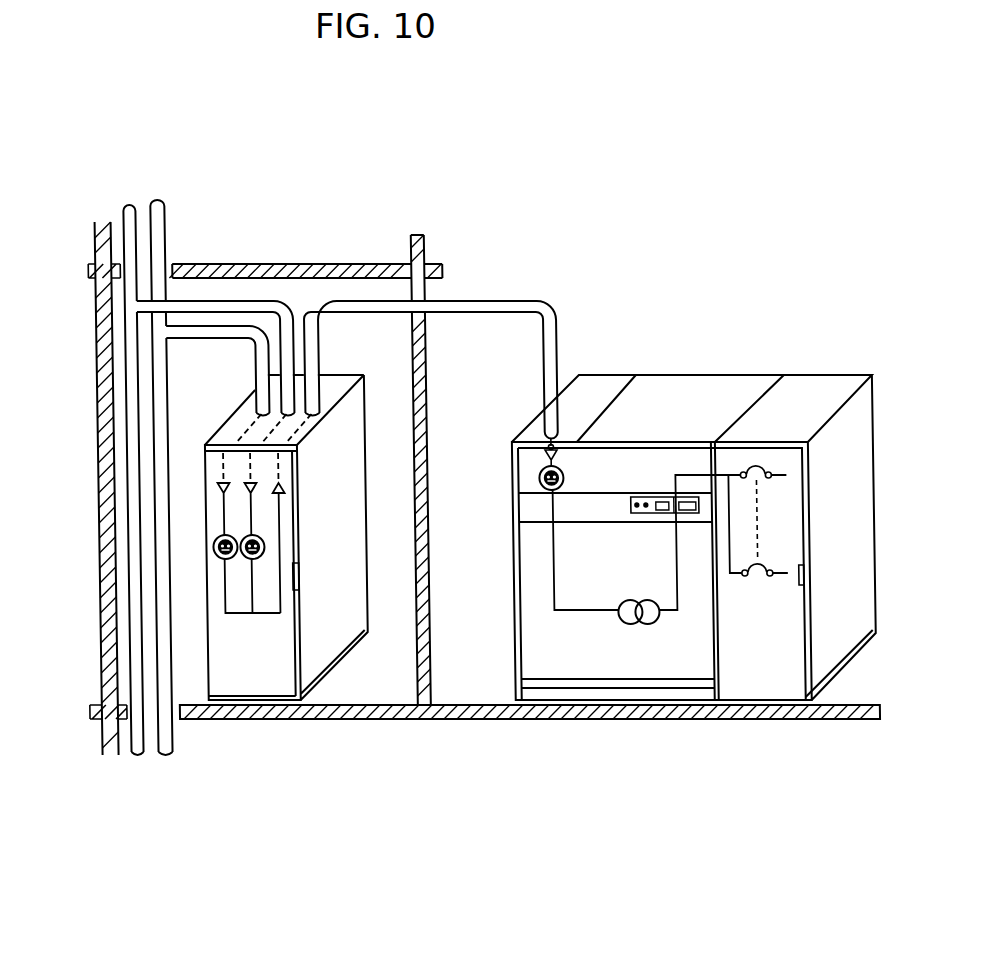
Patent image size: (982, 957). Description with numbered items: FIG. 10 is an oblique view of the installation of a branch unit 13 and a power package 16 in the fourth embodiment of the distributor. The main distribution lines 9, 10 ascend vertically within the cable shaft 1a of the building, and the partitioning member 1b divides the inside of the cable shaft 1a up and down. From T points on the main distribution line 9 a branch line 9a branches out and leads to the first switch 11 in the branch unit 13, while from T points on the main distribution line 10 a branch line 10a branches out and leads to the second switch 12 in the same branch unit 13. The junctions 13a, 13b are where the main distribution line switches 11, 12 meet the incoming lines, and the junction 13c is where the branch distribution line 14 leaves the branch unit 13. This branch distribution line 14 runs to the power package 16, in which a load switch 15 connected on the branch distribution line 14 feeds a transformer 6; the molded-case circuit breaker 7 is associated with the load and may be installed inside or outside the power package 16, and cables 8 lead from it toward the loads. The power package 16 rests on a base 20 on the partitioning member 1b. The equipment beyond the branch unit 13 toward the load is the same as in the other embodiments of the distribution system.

The cable shaft 1a is at (108, 377).
The partitioning member 1b is at (323, 264).
The transformer 6 is at (647, 624).
The molded-case circuit breaker 7 is at (757, 580).
The cable 8 is at (777, 576).
The main distribution line 9 is at (172, 742).
The branch line 9a is at (247, 325).
The main distribution line 10 is at (125, 742).
The branch line 10a is at (212, 300).
The first switch 11 is at (213, 550).
The second switch 12 is at (240, 534).
The branch unit 13 is at (355, 648).
The junction 13a is at (220, 486).
The junction 13b is at (249, 483).
The junction 13c is at (287, 490).
The branch distribution line 14 is at (516, 299).
The load switch 15 is at (561, 470).
The power package 16 is at (695, 374).
The base 20 is at (845, 668).